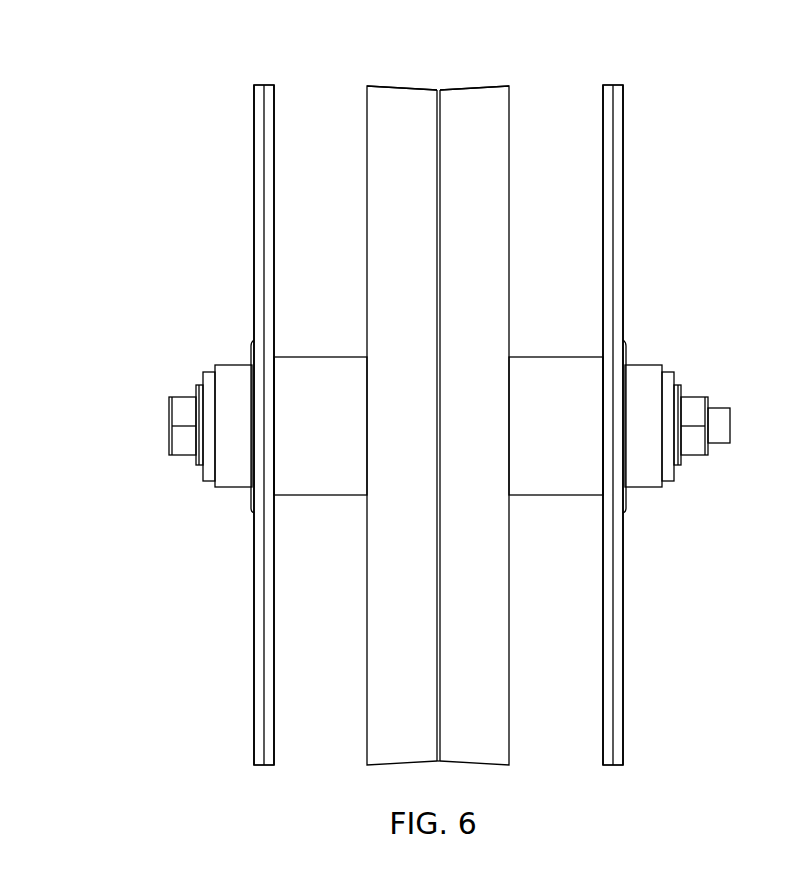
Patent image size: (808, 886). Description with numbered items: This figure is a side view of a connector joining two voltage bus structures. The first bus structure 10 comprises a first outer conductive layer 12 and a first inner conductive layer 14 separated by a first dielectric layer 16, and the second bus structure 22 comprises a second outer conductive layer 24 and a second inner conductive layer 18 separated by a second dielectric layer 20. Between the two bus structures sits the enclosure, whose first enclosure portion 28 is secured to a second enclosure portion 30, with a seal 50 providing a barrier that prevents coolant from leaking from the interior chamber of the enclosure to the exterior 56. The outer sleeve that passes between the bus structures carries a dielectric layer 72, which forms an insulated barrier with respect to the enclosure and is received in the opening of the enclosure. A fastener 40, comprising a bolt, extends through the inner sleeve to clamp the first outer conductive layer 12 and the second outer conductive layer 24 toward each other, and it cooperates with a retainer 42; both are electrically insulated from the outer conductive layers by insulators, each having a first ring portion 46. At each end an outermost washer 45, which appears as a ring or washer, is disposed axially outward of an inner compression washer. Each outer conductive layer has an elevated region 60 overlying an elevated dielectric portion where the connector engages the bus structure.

The first bus structure 10 is at (230, 110).
The first outer conductive layer 12 is at (254, 727).
The first inner conductive layer 14 is at (274, 730).
The first dielectric layer 16 is at (264, 766).
The second inner conductive layer 18 is at (603, 725).
The second dielectric layer 20 is at (612, 766).
The second bus structure 22 is at (647, 110).
The second outer conductive layer 24 is at (623, 728).
The first enclosure portion 28 is at (367, 198).
The second enclosure portion 30 is at (510, 186).
The fastener 40 is at (177, 413).
The retainer 42 is at (700, 413).
The outermost washer 45 is at (207, 377).
The first ring portion 46 is at (228, 363).
The seal 50 is at (437, 88).
The exterior 56 is at (367, 97).
The elevated region 60 is at (250, 352).
The dielectric layer 72 is at (325, 392).